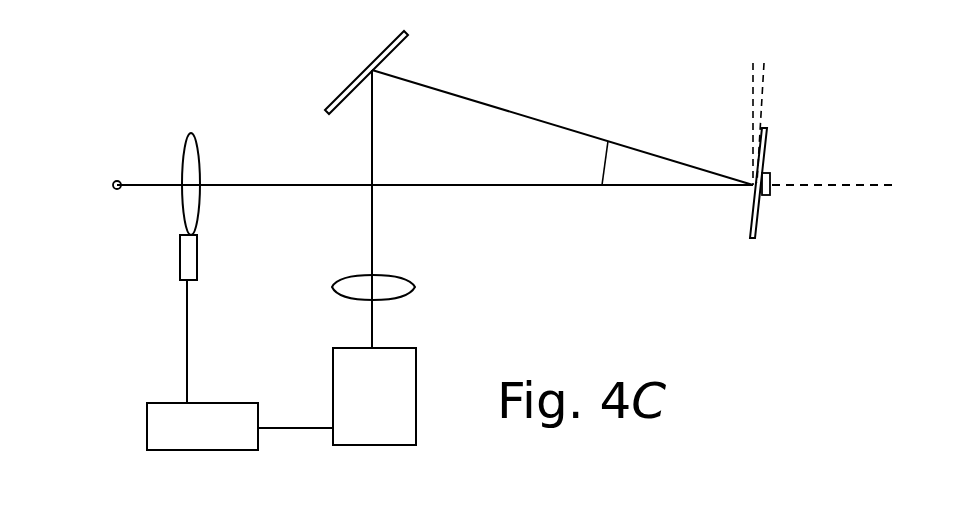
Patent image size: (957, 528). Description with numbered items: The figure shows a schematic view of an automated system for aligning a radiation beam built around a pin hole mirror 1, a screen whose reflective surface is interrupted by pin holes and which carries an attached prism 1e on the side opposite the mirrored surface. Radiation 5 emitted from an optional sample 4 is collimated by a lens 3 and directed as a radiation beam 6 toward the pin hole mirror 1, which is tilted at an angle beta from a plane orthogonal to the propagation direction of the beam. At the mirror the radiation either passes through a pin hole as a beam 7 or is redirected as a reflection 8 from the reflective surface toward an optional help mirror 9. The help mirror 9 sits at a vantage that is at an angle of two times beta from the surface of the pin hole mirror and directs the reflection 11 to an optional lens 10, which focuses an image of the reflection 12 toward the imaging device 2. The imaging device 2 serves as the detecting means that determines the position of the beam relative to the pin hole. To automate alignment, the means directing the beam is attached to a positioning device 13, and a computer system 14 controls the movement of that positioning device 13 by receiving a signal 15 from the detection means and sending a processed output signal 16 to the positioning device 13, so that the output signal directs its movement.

The pin hole mirror 1 is at (757, 230).
The prism 1e is at (770, 172).
The imaging device 2 is at (374, 396).
The lens 3 is at (198, 222).
The sample 4 is at (112, 178).
The radiation 5 is at (150, 188).
The radiation beam 6 is at (500, 188).
The beam 7 is at (826, 185).
The reflection 8 is at (489, 104).
The help mirror 9 is at (366, 65).
The lens 10 is at (415, 287).
The reflection 11 is at (372, 233).
The reflection 12 is at (372, 325).
The positioning device 13 is at (180, 265).
The computer system 14 is at (147, 428).
The signal 15 is at (288, 430).
The processed output signal 16 is at (186, 331).